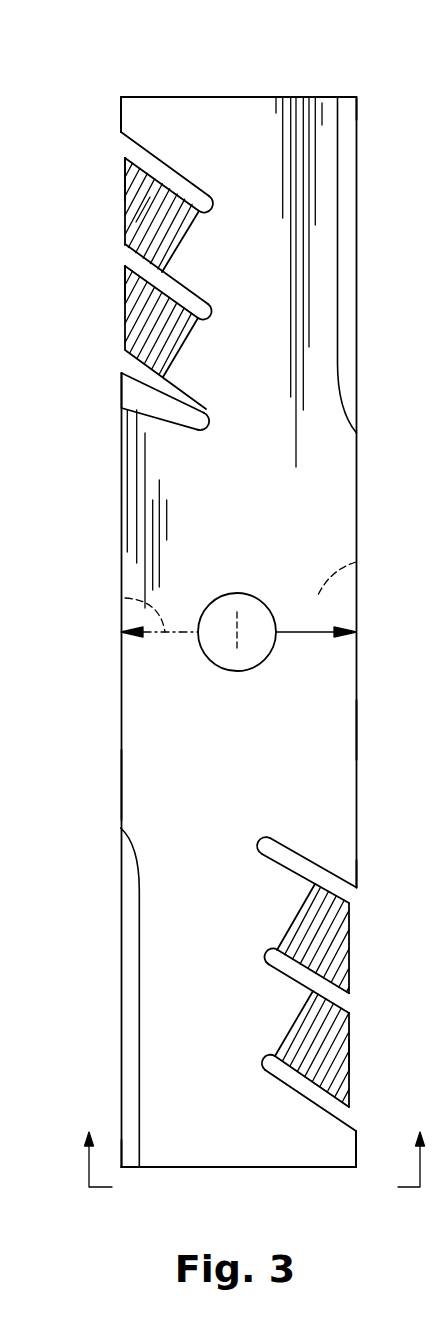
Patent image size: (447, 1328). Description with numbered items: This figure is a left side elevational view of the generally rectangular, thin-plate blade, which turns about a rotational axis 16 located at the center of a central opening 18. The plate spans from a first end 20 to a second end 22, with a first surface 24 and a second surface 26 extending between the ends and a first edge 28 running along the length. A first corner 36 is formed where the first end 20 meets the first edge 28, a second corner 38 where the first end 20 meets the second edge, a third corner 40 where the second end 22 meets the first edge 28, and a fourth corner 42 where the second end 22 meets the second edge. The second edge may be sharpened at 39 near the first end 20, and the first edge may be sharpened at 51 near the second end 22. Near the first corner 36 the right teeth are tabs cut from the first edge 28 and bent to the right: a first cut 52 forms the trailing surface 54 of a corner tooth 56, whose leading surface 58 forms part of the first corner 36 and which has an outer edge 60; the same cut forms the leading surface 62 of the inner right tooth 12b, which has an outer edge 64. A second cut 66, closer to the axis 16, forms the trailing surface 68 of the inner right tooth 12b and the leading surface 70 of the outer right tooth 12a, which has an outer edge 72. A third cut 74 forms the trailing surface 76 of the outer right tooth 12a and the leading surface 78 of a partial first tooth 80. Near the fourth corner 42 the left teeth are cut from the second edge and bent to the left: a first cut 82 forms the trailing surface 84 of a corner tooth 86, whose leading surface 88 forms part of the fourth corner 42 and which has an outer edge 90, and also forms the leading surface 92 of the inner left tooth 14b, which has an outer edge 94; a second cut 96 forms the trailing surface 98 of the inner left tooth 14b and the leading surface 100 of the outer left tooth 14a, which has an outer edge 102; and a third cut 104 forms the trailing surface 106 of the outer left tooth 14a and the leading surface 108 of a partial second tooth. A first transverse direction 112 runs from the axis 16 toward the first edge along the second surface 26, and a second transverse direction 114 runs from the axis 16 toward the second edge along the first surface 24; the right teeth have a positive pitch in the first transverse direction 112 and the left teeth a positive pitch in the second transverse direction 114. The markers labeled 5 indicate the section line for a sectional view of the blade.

The section line 5- 5 is at (254, 1147).
The outer right tooth 12a is at (148, 345).
The inner right tooth 12b is at (148, 232).
The outer left tooth 14a is at (355, 905).
The inner left tooth 14b is at (352, 1035).
The rotational axis 16 is at (240, 628).
The central opening 18 is at (228, 594).
The first end 20 is at (233, 96).
The second end 22 is at (185, 1168).
The first surface 24 is at (345, 722).
The second surface 26 is at (360, 565).
The first edge 28 is at (121, 780).
The first corner 36 is at (145, 45).
The second corner 38 is at (370, 100).
The sharpened portion of second edge 39 is at (345, 243).
The third corner 40 is at (130, 1195).
The fourth corner 42 is at (368, 1198).
The sharpened portion of first edge 51 is at (139, 1063).
The first cut 52 is at (135, 145).
The trailing surface of corner tooth 54 is at (165, 168).
The corner tooth 56 is at (143, 120).
The leading surface of corner tooth 58 is at (186, 96).
The outer edge of corner tooth 60 is at (121, 117).
The leading surface of inner right tooth 62 is at (145, 206).
The outer edge of inner right tooth 64 is at (125, 185).
The second cut 66 is at (160, 283).
The trailing surface of inner right tooth 68 is at (135, 300).
The leading surface of outer right tooth 70 is at (185, 302).
The outer edge of outer right tooth 72 is at (130, 316).
The third cut 74 is at (140, 392).
The trailing surface of outer right tooth 76 is at (140, 405).
The leading surface of partial first tooth 78 is at (180, 412).
The partial first tooth 80 is at (143, 417).
The first cut 82 is at (337, 1113).
The trailing surface of corner tooth 84 is at (300, 1095).
The corner tooth 86 is at (337, 1143).
The leading surface of corner tooth 88 is at (293, 1168).
The outer edge of corner tooth 90 is at (356, 1145).
The leading surface of inner left tooth 92 is at (283, 1042).
The outer edge of inner left tooth 94 is at (350, 1050).
The second cut 96 is at (327, 998).
The trailing surface of inner left tooth 98 is at (350, 985).
The leading surface of outer left tooth 100 is at (303, 832).
The outer edge of outer left tooth 102 is at (350, 948).
The third cut 104 is at (338, 880).
The trailing surface of outer left tooth 106 is at (303, 866).
The leading surface of partial second tooth 108 is at (320, 872).
The first transverse direction 112 is at (118, 596).
The second transverse direction 114 is at (318, 632).